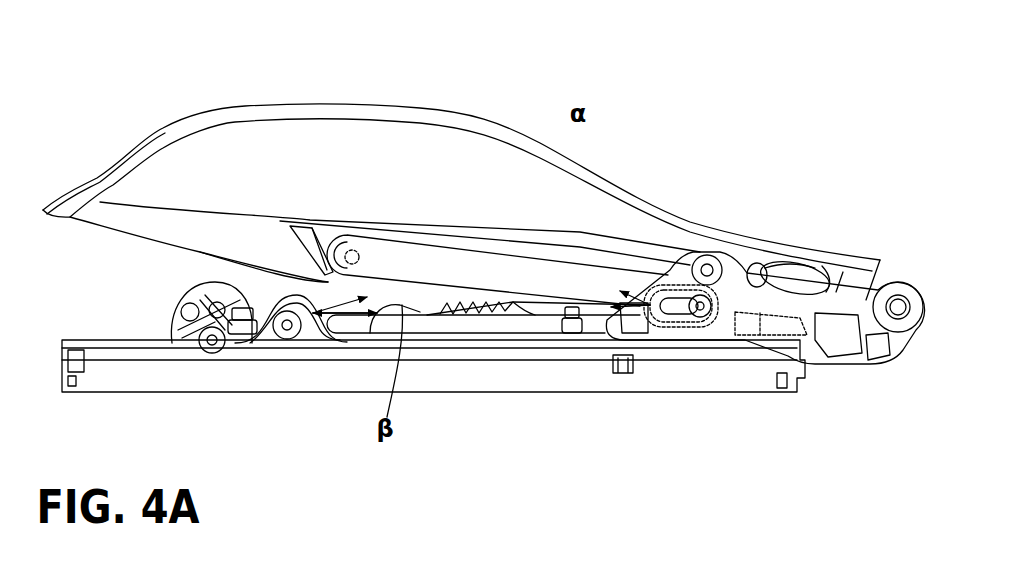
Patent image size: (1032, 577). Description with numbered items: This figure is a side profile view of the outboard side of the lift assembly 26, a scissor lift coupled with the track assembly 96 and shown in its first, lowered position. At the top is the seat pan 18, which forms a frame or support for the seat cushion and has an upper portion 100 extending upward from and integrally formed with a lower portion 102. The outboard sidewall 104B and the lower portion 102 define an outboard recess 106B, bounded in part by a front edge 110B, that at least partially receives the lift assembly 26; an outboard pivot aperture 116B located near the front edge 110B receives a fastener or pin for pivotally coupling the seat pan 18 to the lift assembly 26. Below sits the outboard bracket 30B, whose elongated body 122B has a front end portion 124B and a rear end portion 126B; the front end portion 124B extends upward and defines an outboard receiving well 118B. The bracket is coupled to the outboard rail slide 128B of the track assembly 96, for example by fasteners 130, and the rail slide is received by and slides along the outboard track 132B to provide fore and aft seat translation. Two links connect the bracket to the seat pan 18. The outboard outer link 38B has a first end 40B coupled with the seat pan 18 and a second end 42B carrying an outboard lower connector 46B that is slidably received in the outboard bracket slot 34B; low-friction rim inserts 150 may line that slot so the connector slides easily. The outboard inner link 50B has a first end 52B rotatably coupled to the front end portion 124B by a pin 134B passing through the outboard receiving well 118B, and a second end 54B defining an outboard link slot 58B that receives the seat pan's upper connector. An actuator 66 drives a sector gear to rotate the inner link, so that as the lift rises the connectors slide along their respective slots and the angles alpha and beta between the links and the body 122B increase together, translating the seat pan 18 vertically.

The seat pan 18 is at (197, 172).
The lift assembly 26 is at (720, 112).
The outboard bracket 30B is at (610, 327).
The outboard bracket slot 34B is at (700, 317).
The outboard outer link 38B is at (420, 263).
The first end 40B is at (323, 225).
The second end 42B is at (672, 300).
The outboard lower connector 46B is at (723, 332).
The outboard inner link 50B is at (633, 261).
The first end 52B is at (333, 323).
The second end 54B is at (790, 270).
The outboard link slot 58B is at (817, 283).
The actuator 66 is at (492, 320).
The track assembly 96 is at (432, 402).
The upper portion 100 is at (463, 177).
The lower portion 102 is at (177, 223).
The outboard sidewall 104B is at (417, 145).
The outboard recess 106B is at (491, 226).
The front edge 110B is at (323, 243).
The outboard pivot aperture 116B is at (350, 243).
The outboard receiving well 118B is at (300, 352).
The elongated body 122B is at (523, 336).
The front end portion 124B is at (267, 333).
The rear end portion 126B is at (755, 352).
The outboard rail slide 128B is at (805, 378).
The fasteners 130 is at (240, 325).
The outboard track 132B is at (383, 378).
The pin 134B is at (287, 339).
The low-friction rim inserts 150 is at (808, 280).